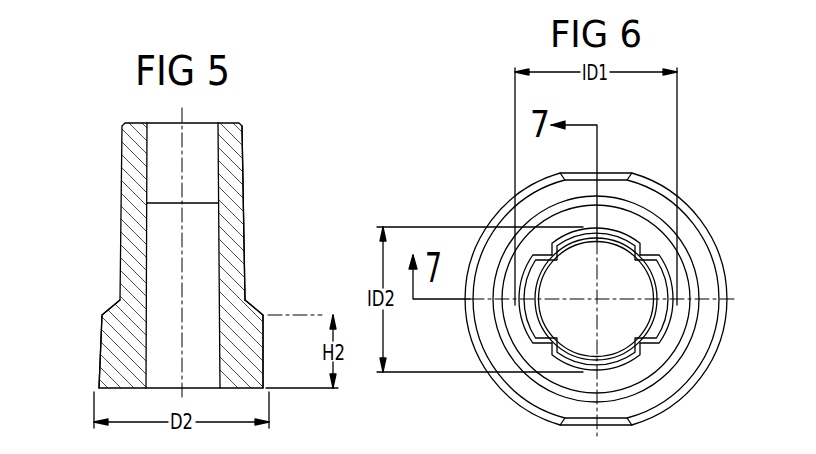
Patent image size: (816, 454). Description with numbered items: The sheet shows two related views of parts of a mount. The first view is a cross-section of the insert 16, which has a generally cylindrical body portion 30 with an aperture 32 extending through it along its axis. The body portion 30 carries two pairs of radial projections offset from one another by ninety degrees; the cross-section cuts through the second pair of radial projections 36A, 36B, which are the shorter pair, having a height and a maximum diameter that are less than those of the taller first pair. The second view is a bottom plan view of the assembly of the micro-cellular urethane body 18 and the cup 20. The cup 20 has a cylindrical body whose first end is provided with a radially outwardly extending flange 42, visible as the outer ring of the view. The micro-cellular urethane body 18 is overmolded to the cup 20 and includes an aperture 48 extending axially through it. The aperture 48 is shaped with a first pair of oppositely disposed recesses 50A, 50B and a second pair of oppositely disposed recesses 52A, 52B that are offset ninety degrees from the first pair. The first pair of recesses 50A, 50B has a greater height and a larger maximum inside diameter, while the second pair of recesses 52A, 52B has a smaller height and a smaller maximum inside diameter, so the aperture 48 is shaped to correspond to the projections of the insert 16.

In FIG. 5, the insert 16 is at (262, 182).
In FIG. 5, the body portion 30 is at (228, 258).
In FIG. 5, the aperture 32 is at (222, 294).
In FIG. 5, the second radial projection 36A is at (100, 352).
In FIG. 5, the second radial projection 36B is at (264, 350).
In FIG. 6, the micro-cellular urethane body 18 is at (507, 222).
In FIG. 6, the cup 20 is at (707, 216).
In FIG. 6, the radially outwardly extending flange 42 is at (513, 392).
In FIG. 6, the aperture 48 is at (648, 305).
In FIG. 6, the first recess 50A is at (523, 262).
In FIG. 6, the first recess 50B is at (652, 313).
In FIG. 6, the second recess 52A is at (612, 236).
In FIG. 6, the second recess 52B is at (572, 361).